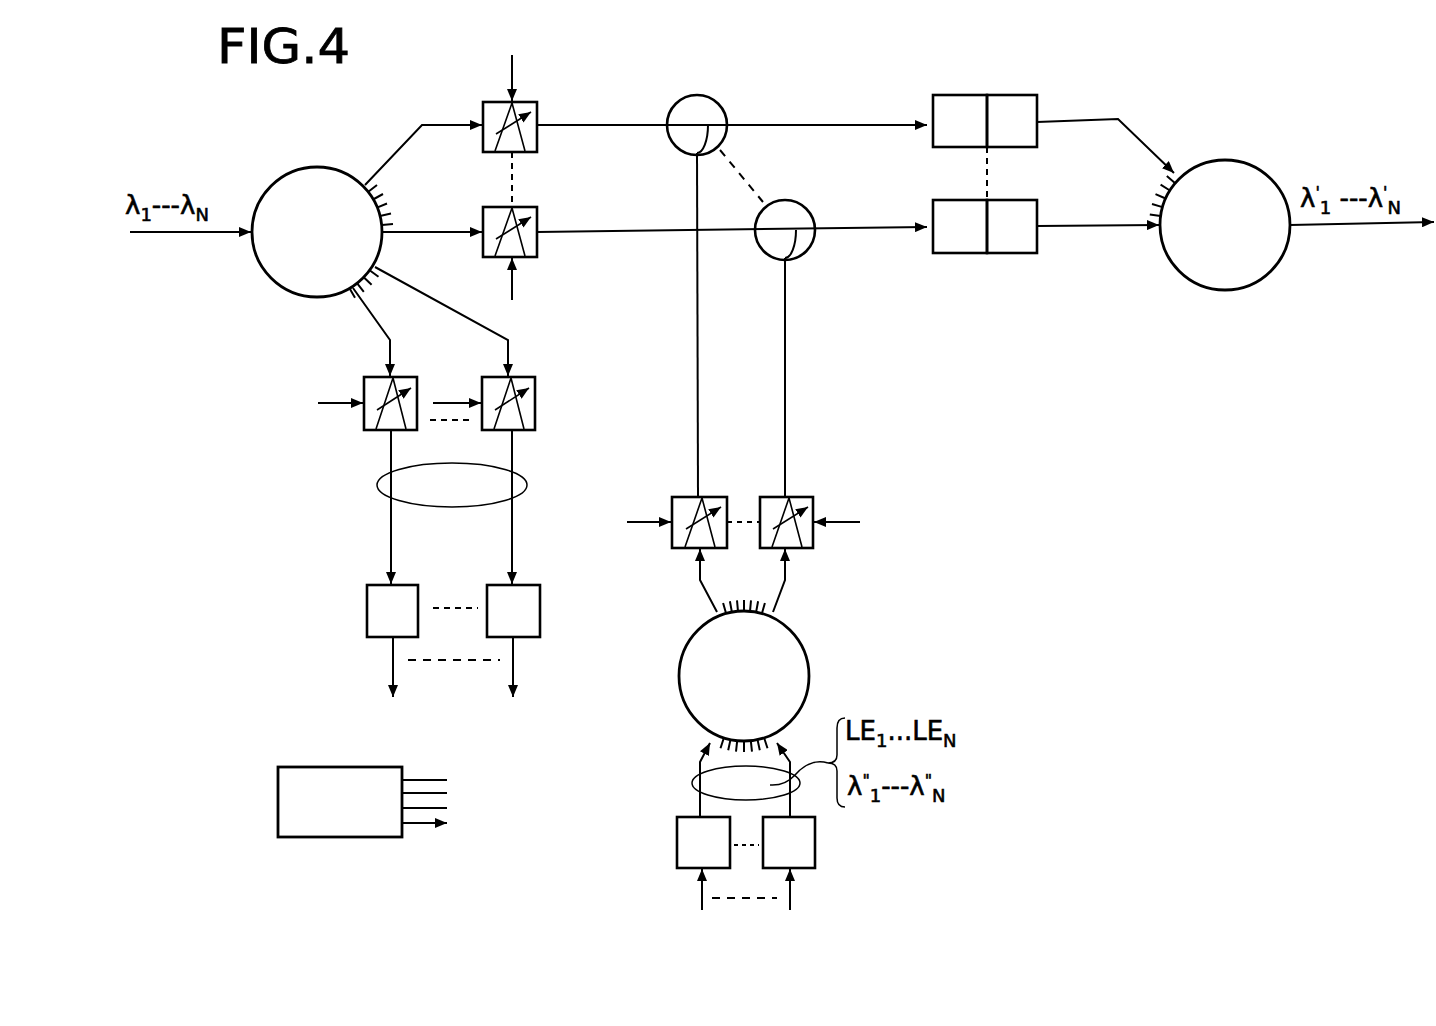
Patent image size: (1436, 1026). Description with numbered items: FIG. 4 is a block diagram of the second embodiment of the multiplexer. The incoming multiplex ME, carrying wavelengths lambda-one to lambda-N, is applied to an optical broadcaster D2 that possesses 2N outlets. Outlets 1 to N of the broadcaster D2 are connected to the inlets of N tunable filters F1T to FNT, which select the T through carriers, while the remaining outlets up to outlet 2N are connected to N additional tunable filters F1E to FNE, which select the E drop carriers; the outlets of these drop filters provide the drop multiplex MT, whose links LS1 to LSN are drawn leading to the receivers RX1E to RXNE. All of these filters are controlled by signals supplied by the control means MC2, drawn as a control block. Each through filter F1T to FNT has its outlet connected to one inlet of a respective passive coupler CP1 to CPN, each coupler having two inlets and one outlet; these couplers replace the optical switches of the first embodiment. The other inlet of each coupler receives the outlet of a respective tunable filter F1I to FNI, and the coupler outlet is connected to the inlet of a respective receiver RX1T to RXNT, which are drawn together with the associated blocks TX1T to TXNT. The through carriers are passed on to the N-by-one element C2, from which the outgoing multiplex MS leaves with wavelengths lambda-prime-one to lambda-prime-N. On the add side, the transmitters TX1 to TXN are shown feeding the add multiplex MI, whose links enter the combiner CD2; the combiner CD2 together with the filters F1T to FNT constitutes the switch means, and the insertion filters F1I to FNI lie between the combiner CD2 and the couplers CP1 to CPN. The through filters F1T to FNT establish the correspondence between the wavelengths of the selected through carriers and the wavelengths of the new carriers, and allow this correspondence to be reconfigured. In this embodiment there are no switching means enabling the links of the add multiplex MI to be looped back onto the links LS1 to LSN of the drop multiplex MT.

The optical broadcaster D2 is at (305, 174).
The incoming multiplex ME is at (165, 236).
The first outlet of the broadcaster 1 is at (384, 160).
The Nth outlet of the broadcaster N is at (434, 231).
The 2Nth outlet of the broadcaster 2N is at (386, 311).
The first through tunable filter F1T is at (523, 100).
The Nth through tunable filter FNT is at (533, 258).
The first passive coupler CP1 is at (697, 95).
The Nth passive coupler CPN is at (803, 204).
The first through receiver RX1T is at (955, 106).
The first transit transmitter (TX1T') TX1T is at (1023, 104).
The Nth through receiver RXNT is at (955, 247).
The Nth transit transmitter (TXNT') TXNT is at (1010, 243).
The Nx1 multiplexer / combiner C2 is at (1225, 161).
The outgoing multiplex MS is at (1353, 228).
The first drop tunable filter F1E is at (375, 377).
The Nth drop tunable filter FNE is at (525, 376).
The drop multiplex MT is at (377, 485).
The first link of the drop multiplex LS1 is at (391, 535).
The Nth link of the drop multiplex LSN is at (513, 540).
The extraction receiver 1 RX1E is at (383, 615).
The extraction receiver N RXNE is at (538, 622).
The first insertion tunable filter F1I is at (677, 548).
The Nth insertion tunable filter FNI is at (810, 548).
The combiner CD2 is at (680, 672).
The add multiplex MI is at (697, 782).
The insertion transmitter 1 (TX1') TX1 is at (692, 848).
The insertion transmitter N (TXN') TXN is at (810, 846).
The control means MC2 is at (326, 776).